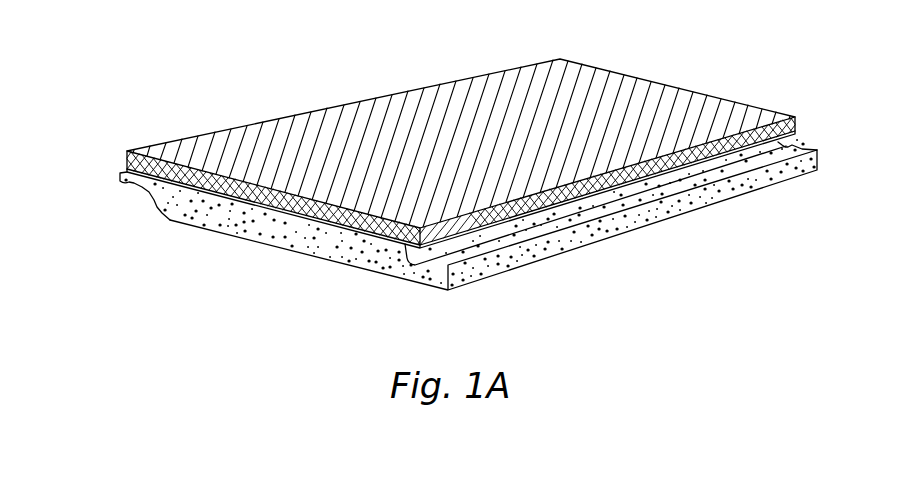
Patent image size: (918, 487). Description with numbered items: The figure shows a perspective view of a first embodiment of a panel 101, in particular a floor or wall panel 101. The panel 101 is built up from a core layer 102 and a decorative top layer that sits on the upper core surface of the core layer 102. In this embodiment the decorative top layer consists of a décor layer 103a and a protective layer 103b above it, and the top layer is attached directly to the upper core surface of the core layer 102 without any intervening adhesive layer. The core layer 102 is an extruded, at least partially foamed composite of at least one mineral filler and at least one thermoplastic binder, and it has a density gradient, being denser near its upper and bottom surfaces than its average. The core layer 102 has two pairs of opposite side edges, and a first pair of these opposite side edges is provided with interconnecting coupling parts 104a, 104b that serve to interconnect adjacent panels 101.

The panel 101 is at (115, 131).
The core layer 102 is at (330, 243).
The décor layer 103a is at (243, 196).
The protective layer 103b is at (415, 117).
The interconnecting coupling part 104a is at (120, 177).
The interconnecting coupling part 104b is at (593, 235).